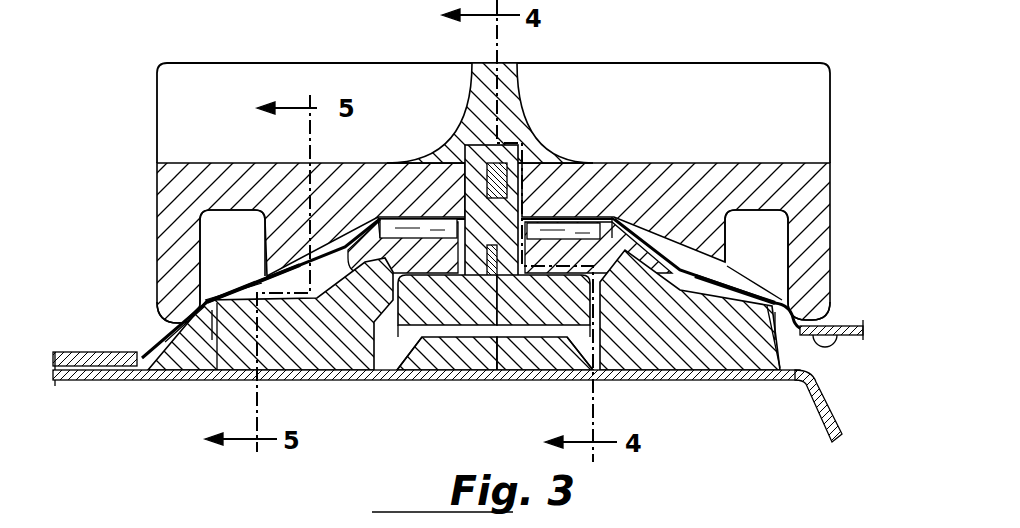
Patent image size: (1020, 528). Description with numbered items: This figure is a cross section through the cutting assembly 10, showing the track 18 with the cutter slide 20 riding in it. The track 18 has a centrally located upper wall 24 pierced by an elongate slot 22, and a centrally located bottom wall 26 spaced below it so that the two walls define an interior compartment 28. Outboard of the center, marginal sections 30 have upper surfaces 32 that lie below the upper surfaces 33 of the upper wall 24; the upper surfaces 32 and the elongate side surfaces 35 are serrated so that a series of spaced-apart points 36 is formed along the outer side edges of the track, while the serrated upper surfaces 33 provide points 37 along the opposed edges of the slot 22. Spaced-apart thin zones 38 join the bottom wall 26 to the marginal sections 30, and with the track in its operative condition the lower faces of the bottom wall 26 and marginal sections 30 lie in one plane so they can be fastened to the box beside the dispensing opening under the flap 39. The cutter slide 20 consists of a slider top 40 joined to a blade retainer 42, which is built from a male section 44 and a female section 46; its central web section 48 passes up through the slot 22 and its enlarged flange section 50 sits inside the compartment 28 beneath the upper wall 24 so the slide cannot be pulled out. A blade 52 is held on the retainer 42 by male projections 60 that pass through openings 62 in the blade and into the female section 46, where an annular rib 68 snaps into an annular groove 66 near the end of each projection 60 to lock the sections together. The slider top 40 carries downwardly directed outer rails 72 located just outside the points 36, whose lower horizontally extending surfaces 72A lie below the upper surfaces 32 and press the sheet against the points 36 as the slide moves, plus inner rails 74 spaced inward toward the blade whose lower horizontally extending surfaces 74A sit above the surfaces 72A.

The cutting assembly 10 is at (138, 152).
The track 18 is at (808, 371).
The cutter slide 20 is at (166, 62).
The elongate slot 22 is at (470, 278).
The upper wall 24 is at (630, 217).
The bottom wall 26 is at (498, 352).
The interior compartment 28 is at (535, 352).
The marginal sections 30 is at (283, 371).
The upper surfaces 32 is at (240, 291).
The upper surfaces 33 is at (388, 228).
The side surfaces 35 is at (167, 372).
The points 36 is at (200, 294).
The points 37 is at (403, 217).
The thin zones 38 is at (383, 352).
The flap 39 is at (83, 350).
The slider top 40 is at (748, 175).
The blade retainer 42 is at (466, 163).
The male section 44 is at (427, 352).
The female section 46 is at (613, 352).
The central web section 48 is at (437, 177).
The enlarged flange section 50 is at (458, 352).
The blade 52 is at (478, 140).
The male projections 60 is at (533, 215).
The openings 62 is at (500, 232).
The annular groove 66 is at (497, 262).
The annular rib 68 is at (510, 175).
The outer rails 72 is at (167, 239).
The lower horizontally extending surfaces 72A is at (173, 323).
The inner rails 74 is at (277, 229).
The lower horizontally extending surfaces 74A is at (267, 286).